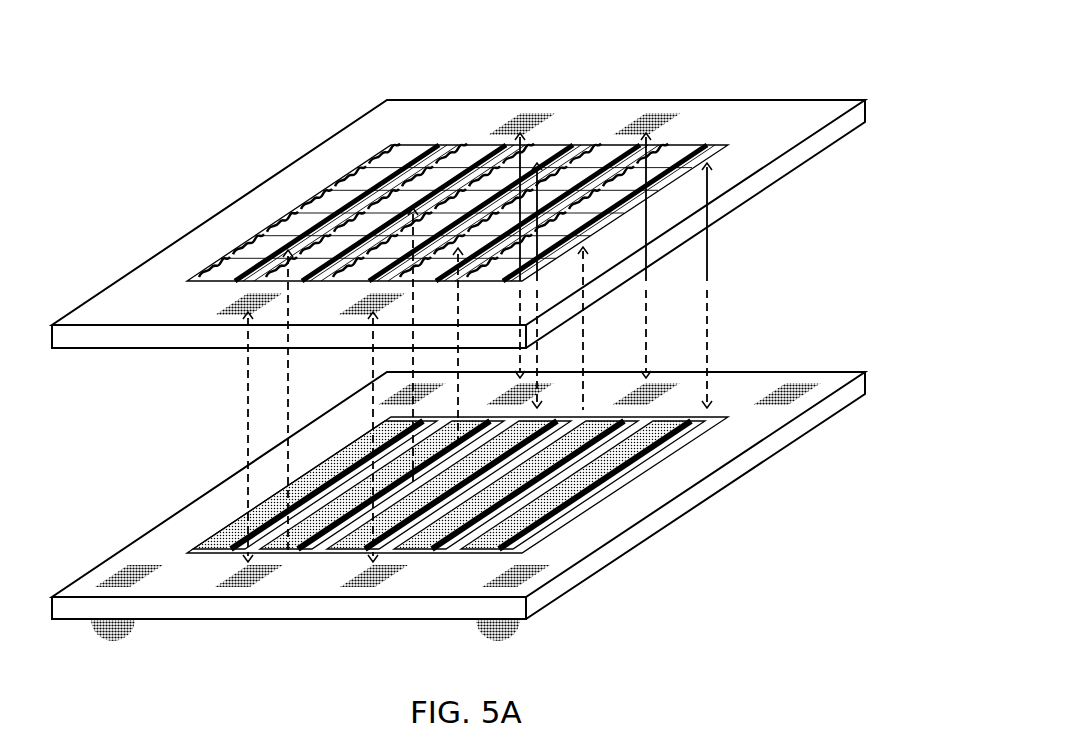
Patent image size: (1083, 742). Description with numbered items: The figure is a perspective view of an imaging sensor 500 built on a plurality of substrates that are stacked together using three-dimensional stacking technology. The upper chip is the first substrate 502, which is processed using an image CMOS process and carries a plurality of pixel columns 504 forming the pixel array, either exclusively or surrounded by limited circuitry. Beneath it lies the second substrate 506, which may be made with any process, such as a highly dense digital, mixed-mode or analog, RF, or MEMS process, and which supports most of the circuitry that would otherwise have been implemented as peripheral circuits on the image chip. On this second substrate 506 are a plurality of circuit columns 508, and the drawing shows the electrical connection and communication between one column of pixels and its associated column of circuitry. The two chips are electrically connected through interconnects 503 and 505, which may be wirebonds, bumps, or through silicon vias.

The imaging sensor 500 is at (153, 148).
The first substrate 502 is at (763, 177).
The interconnects 503 is at (532, 112).
The pixel columns 504 is at (708, 147).
The interconnects 505 is at (235, 587).
The second substrate 506 is at (722, 478).
The circuit columns 508 is at (587, 512).